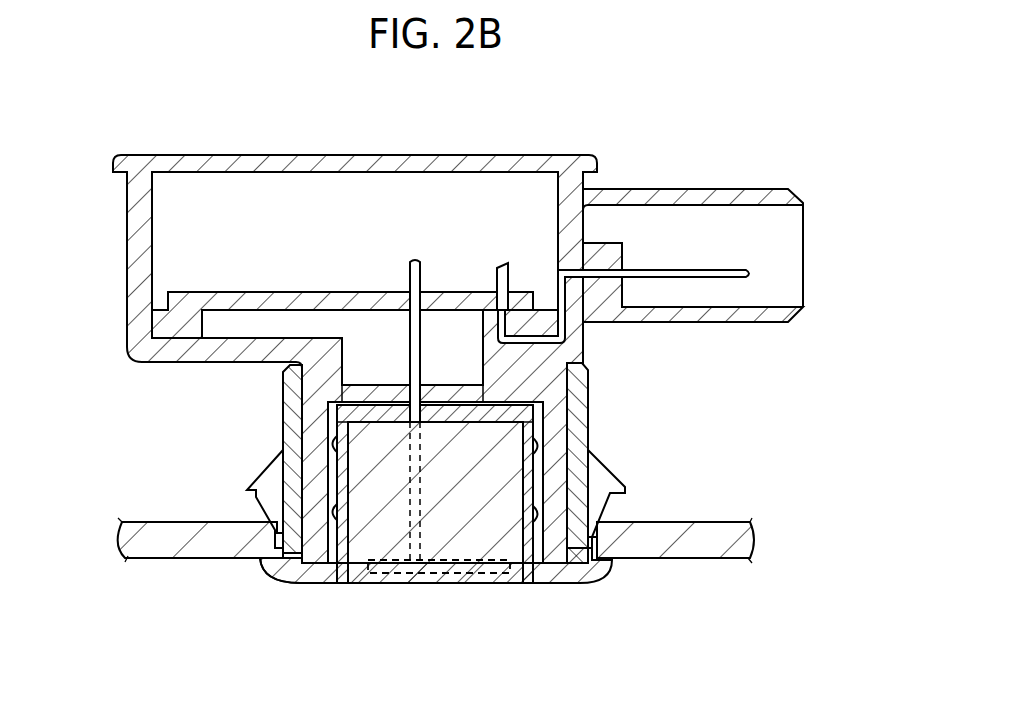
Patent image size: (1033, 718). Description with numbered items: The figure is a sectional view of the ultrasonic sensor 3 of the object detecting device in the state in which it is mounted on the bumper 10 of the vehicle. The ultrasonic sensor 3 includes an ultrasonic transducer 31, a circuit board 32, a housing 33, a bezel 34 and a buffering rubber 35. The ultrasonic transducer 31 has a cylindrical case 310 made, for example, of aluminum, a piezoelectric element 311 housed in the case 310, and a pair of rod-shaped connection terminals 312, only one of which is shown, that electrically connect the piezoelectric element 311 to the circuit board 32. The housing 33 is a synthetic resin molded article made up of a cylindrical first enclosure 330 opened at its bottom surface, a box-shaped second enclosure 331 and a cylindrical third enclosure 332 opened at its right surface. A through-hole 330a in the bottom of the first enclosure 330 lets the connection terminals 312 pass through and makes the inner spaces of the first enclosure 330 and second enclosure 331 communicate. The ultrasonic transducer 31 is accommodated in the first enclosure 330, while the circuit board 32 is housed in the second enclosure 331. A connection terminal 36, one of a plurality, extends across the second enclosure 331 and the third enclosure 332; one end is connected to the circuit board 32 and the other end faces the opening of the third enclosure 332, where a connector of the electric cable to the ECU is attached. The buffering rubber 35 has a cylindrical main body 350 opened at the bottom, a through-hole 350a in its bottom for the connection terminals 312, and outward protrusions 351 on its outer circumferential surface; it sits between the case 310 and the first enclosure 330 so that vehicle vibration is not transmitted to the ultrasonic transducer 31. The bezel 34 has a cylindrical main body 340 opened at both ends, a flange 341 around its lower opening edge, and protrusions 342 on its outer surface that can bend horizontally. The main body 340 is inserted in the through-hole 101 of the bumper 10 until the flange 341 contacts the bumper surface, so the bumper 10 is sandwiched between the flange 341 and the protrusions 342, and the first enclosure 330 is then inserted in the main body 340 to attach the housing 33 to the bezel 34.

The ultrasonic sensor 3 is at (431, 374).
The bumper 10 is at (436, 540).
The through-hole 101 is at (600, 566).
The ultrasonic transducer 31 is at (435, 542).
The case 310 is at (437, 520).
The piezoelectric element 311 is at (490, 575).
The connection terminals 312 is at (411, 275).
The circuit board 32 is at (243, 297).
The housing 33 is at (693, 245).
The first enclosure 330 is at (576, 407).
The through-hole 330a is at (440, 394).
The second enclosure 331 is at (138, 265).
The third enclosure 332 is at (745, 313).
The bezel 34 is at (434, 597).
The main body 340 is at (293, 396).
The flange 341 is at (291, 582).
The protrusions 342 is at (265, 482).
The buffering rubber 35 is at (345, 587).
The main body 350 is at (436, 491).
The through-hole 350a is at (395, 417).
The protrusions 351 is at (334, 446).
The connection terminals 36 is at (704, 269).